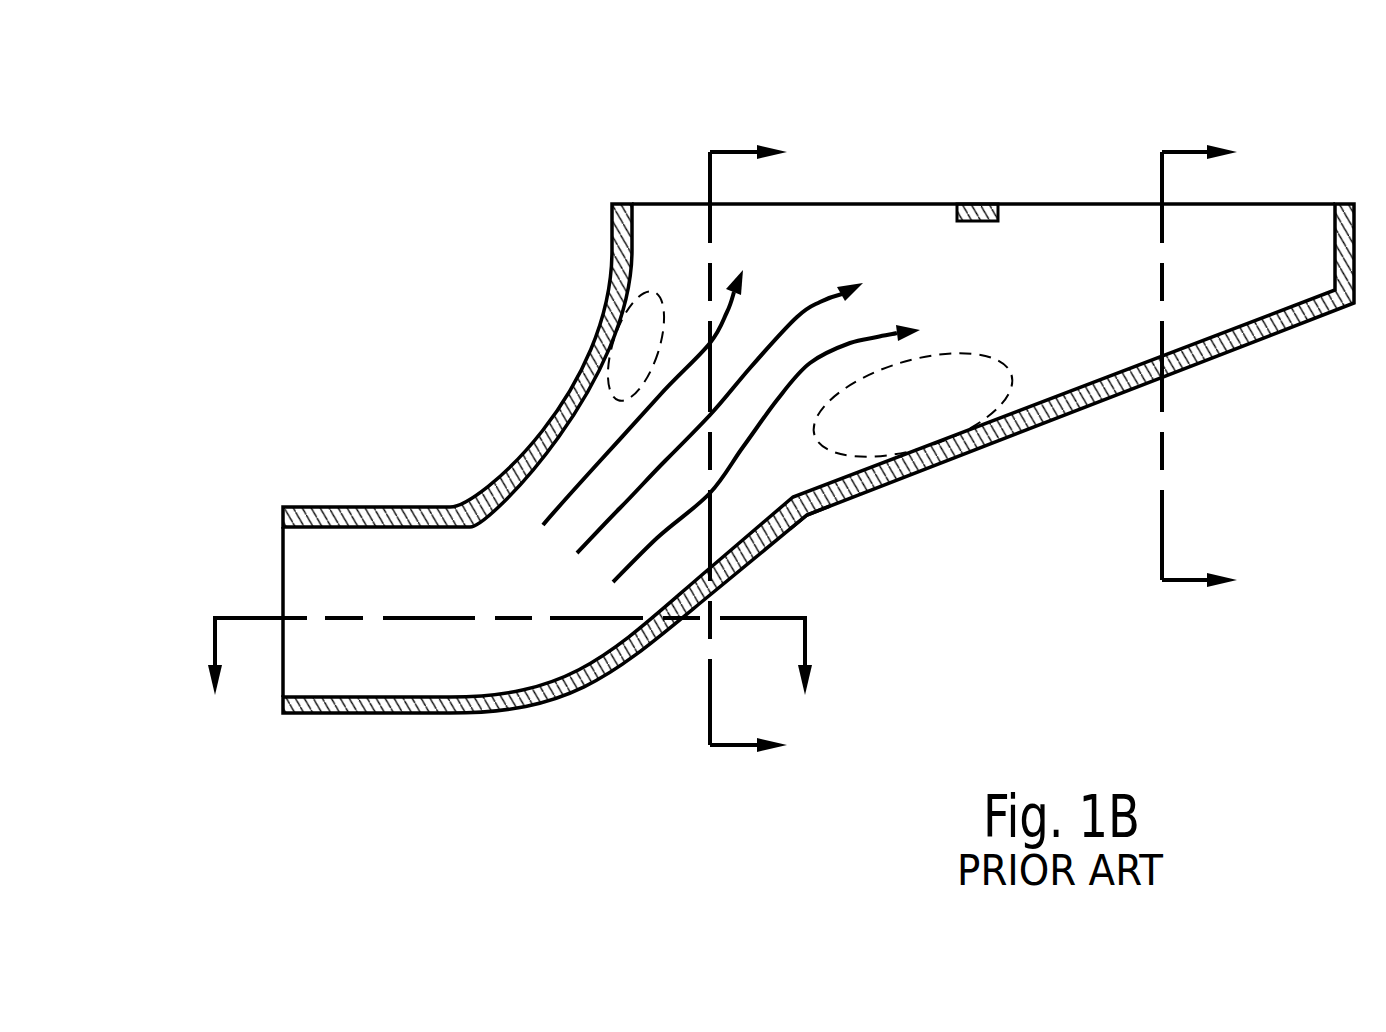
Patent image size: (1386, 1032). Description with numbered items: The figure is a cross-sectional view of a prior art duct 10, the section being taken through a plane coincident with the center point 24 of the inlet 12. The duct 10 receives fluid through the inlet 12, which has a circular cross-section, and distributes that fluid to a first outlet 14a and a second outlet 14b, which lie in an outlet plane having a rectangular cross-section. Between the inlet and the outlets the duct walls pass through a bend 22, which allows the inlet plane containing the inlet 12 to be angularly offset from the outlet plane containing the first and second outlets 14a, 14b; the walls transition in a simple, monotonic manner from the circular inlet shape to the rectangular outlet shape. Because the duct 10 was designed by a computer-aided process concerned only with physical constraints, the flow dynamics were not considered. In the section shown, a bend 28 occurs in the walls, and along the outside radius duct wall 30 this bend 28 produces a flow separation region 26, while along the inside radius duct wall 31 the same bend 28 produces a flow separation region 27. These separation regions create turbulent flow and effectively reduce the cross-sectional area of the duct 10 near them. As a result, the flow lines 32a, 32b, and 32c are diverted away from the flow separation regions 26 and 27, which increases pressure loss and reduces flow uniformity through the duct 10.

The duct 10 is at (420, 141).
The inlet 12 is at (247, 532).
The first outlet 14a is at (867, 166).
The second outlet 14b is at (1100, 166).
The bend 22 is at (481, 350).
The center point 24 is at (283, 618).
The flow separation region 26 is at (988, 367).
The flow separation region 27 is at (663, 295).
The bend 28 is at (807, 517).
The outside radius duct wall 30 is at (962, 503).
The inside radius duct wall 31 is at (500, 468).
The flow line 32a is at (740, 300).
The flow line 32b is at (808, 308).
The flow line 32c is at (877, 340).